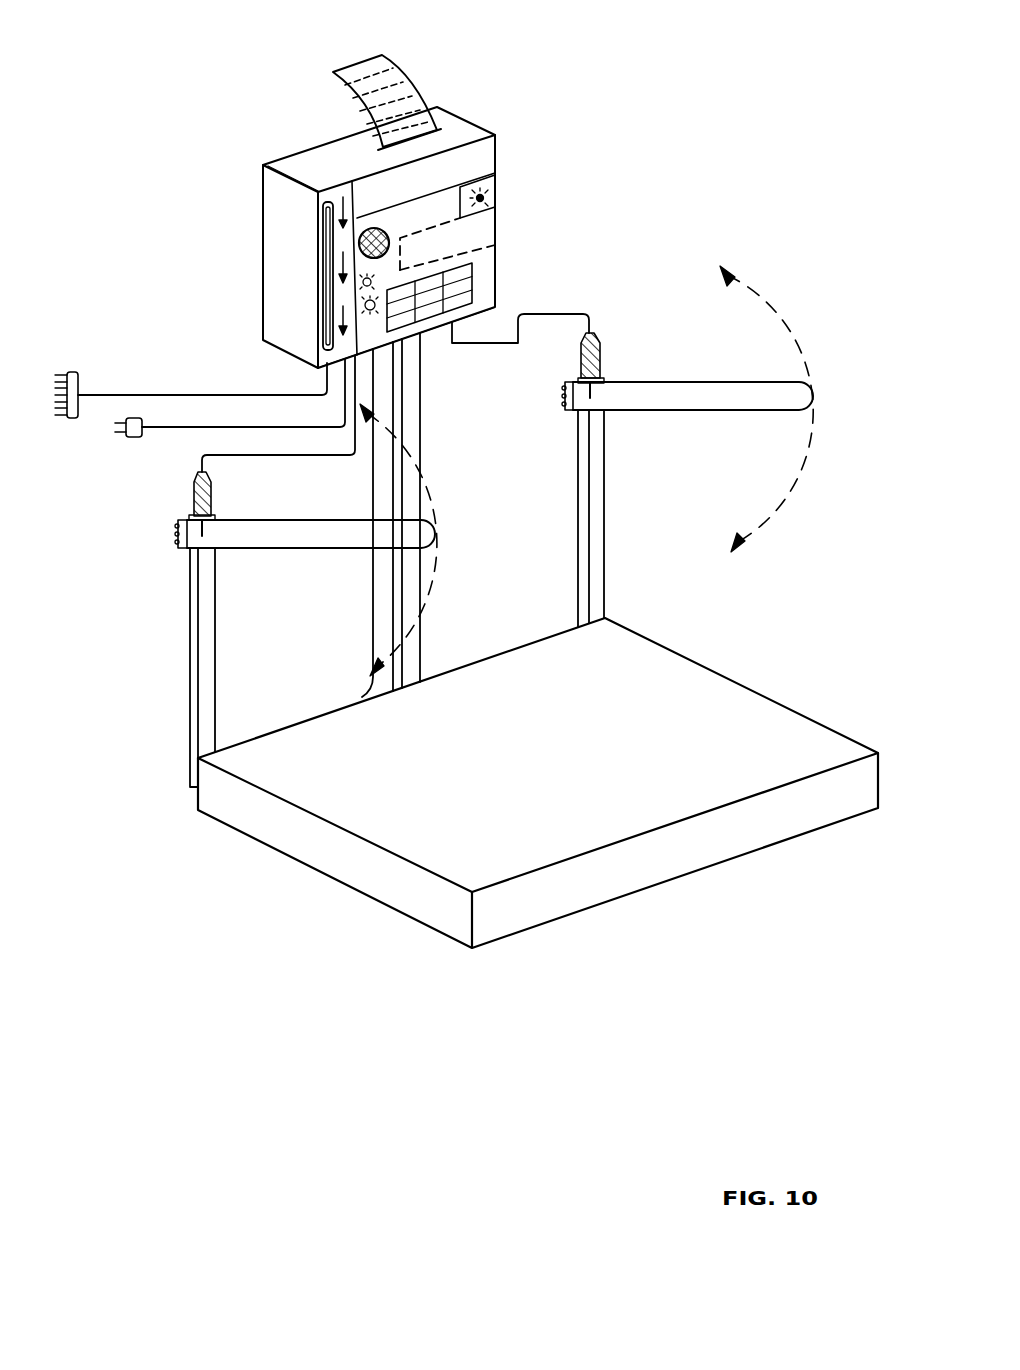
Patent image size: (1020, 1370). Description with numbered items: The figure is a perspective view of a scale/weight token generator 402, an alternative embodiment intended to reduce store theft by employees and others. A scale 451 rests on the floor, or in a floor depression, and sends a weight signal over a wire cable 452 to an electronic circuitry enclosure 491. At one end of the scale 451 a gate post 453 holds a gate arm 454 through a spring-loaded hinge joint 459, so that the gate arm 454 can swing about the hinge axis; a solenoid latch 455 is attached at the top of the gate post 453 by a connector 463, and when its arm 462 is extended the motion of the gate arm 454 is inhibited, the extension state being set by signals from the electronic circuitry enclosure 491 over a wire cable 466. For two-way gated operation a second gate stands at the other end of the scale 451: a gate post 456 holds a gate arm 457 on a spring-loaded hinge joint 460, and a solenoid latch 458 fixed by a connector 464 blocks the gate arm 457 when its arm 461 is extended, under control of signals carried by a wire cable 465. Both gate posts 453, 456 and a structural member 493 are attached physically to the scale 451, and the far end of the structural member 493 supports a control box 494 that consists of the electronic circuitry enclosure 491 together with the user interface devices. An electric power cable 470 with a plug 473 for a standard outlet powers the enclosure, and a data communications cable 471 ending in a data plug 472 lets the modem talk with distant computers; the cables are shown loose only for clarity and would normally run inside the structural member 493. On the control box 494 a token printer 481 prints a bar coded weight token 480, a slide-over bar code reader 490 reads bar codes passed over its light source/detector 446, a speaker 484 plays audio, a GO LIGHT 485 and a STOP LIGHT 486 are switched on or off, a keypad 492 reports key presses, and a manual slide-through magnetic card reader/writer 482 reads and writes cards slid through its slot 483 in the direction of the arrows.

The scale/weight token generator 402 is at (176, 184).
The light source/detector 446 is at (484, 197).
The scale 451 is at (667, 647).
The wire cable 452 is at (372, 607).
The gate post 453 is at (607, 489).
The gate arm 454 is at (718, 390).
The solenoid latch 455 is at (600, 347).
The gate post 456 is at (188, 656).
The gate arm 457 is at (278, 551).
The solenoid latch 458 is at (211, 488).
The spring-loaded hinge joint 459 is at (563, 409).
The spring-loaded hinge joint 460 is at (178, 530).
The arm 461 is at (184, 548).
The arm 462 is at (594, 393).
The connector 463 is at (605, 378).
The connector 464 is at (214, 518).
The wire cable 465 is at (343, 459).
The wire cable 466 is at (511, 344).
The electric power cable 470 is at (172, 430).
The data communications cable 471 is at (190, 393).
The data plug 472 is at (78, 372).
The plug 473 is at (127, 440).
The bar coded weight token 480 is at (404, 66).
The token printer 481 is at (452, 125).
The magnetic card reader/writer 482 is at (290, 158).
The slot 483 is at (322, 212).
The speaker 484 is at (360, 242).
The GO LIGHT 485 is at (363, 282).
The STOP LIGHT 486 is at (366, 306).
The bar code reader 490 is at (495, 175).
The electronic circuitry enclosure 491 is at (486, 228).
The keypad 492 is at (472, 273).
The structural member 493 is at (423, 450).
The control box 494 is at (434, 329).